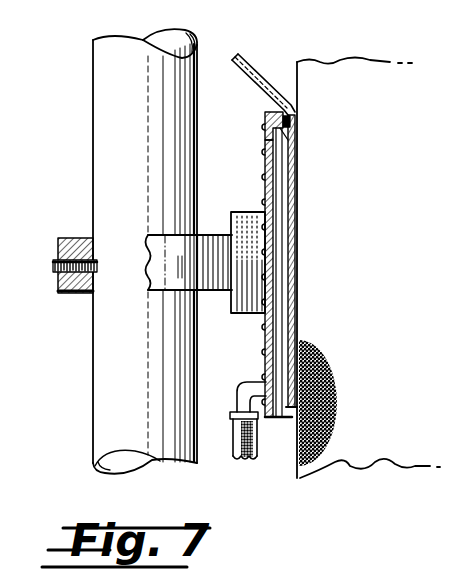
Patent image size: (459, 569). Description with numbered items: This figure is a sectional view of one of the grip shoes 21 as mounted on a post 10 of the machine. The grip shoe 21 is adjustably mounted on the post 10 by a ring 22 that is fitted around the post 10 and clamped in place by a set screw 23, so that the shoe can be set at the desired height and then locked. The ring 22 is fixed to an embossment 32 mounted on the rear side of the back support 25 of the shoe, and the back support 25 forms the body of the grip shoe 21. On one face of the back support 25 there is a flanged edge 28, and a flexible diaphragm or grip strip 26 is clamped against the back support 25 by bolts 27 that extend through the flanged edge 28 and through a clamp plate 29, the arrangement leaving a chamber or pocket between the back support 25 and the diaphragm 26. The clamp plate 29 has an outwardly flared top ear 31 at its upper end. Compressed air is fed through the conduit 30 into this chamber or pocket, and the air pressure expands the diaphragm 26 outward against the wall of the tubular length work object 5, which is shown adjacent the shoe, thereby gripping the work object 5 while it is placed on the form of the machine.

The tubular length work object 5 is at (368, 268).
The post 10 is at (113, 114).
The grip shoe 21 is at (293, 121).
The ring 22 is at (75, 238).
The set screw 23 is at (55, 265).
The back support 25 is at (272, 137).
The flexible diaphragm or grip strip 26 is at (299, 193).
The bolts 27 is at (263, 153).
The flanged edge 28 is at (265, 113).
The clamp plate 29 is at (296, 402).
The conduit 30 is at (243, 440).
The outwardly flared top ear 31 is at (257, 81).
The embossment 32 is at (245, 222).